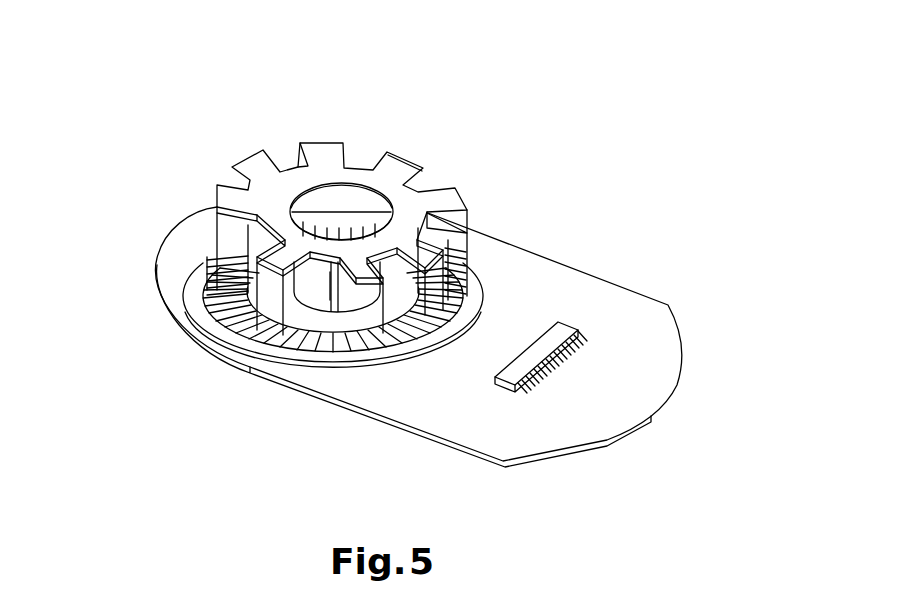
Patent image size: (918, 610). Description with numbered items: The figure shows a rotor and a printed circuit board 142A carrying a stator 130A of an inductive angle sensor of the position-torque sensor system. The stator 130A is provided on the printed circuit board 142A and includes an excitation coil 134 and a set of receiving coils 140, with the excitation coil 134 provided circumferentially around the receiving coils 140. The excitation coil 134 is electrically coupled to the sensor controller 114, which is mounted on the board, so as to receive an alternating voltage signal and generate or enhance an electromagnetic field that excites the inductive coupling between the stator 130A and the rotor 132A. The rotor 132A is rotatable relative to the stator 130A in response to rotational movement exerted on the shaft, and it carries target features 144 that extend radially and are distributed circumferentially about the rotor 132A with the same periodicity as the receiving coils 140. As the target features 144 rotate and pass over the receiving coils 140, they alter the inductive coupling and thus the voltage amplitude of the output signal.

The sensor controller 114 is at (512, 388).
The stator 130A is at (293, 341).
The rotor 132A is at (247, 152).
The excitation coil 134 is at (255, 338).
The receiving coils 140 is at (457, 298).
The printed circuit board 142A is at (658, 315).
The target features 144 is at (255, 243).